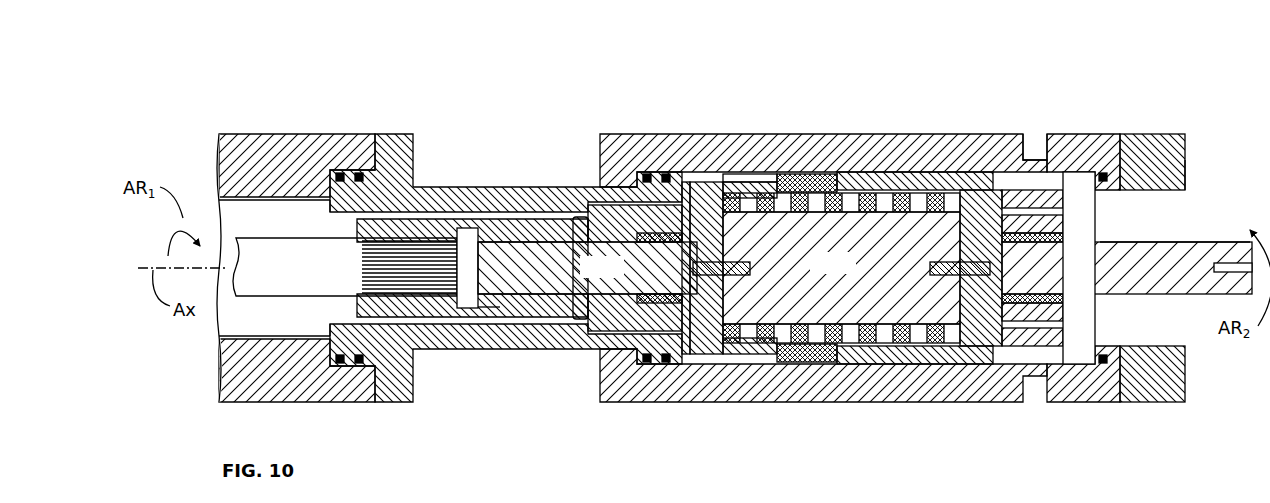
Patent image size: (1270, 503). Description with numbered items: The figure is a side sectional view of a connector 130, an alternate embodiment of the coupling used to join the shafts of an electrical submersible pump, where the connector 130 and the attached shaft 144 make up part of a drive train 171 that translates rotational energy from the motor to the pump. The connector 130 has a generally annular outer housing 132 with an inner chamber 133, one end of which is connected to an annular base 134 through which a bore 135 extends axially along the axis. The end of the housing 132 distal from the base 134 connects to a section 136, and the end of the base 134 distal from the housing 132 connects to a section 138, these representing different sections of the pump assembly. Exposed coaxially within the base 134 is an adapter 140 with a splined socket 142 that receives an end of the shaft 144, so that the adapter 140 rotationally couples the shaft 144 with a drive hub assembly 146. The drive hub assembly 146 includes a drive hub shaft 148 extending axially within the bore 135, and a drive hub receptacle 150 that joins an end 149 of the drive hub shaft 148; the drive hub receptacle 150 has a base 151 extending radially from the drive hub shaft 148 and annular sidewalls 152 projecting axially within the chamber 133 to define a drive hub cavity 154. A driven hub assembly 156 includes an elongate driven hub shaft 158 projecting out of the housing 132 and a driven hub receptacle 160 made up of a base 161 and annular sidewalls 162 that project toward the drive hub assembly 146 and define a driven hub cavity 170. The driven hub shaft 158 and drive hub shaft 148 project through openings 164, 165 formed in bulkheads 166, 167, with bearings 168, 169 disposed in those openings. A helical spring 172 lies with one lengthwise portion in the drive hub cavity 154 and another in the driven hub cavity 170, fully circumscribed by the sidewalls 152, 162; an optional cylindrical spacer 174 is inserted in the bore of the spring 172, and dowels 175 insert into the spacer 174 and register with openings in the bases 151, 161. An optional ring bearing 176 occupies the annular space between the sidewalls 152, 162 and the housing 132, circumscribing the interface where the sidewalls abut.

The connector 130 is at (758, 100).
The outer housing 132 is at (1012, 134).
The inner chamber 133 is at (900, 172).
The annular base 134 is at (424, 137).
The bore 135 is at (322, 318).
The section 136 is at (1150, 134).
The section 138 is at (274, 134).
The adapter 140 is at (490, 307).
The splined socket 142 is at (418, 219).
The shaft 144 is at (345, 267).
The drive hub assembly 146 is at (686, 354).
The drive hub shaft 148 is at (587, 268).
The end 149 is at (528, 307).
The drive hub receptacle 150 is at (705, 182).
The base 151 is at (770, 174).
The annular sidewalls 152 is at (740, 182).
The drive hub cavity 154 is at (822, 172).
The driven hub assembly 156 is at (1003, 190).
The driven hub shaft 158 is at (1202, 242).
The driven hub receptacle 160 is at (1178, 169).
The base 161 is at (950, 364).
The annular sidewalls 162 is at (905, 343).
The opening 164 is at (1127, 258).
The opening 165 is at (600, 205).
The bulkhead 166 is at (1068, 324).
The bulkhead 167 is at (600, 331).
The bearing 168 is at (1064, 240).
The bearing 169 is at (640, 235).
The driven hub cavity 170 is at (805, 362).
The drive train 171 is at (1135, 100).
The helical spring 172 is at (745, 354).
The cylindrical spacer 174 is at (841, 268).
The dowel 175 is at (1030, 321).
The ring bearing 176 is at (800, 174).